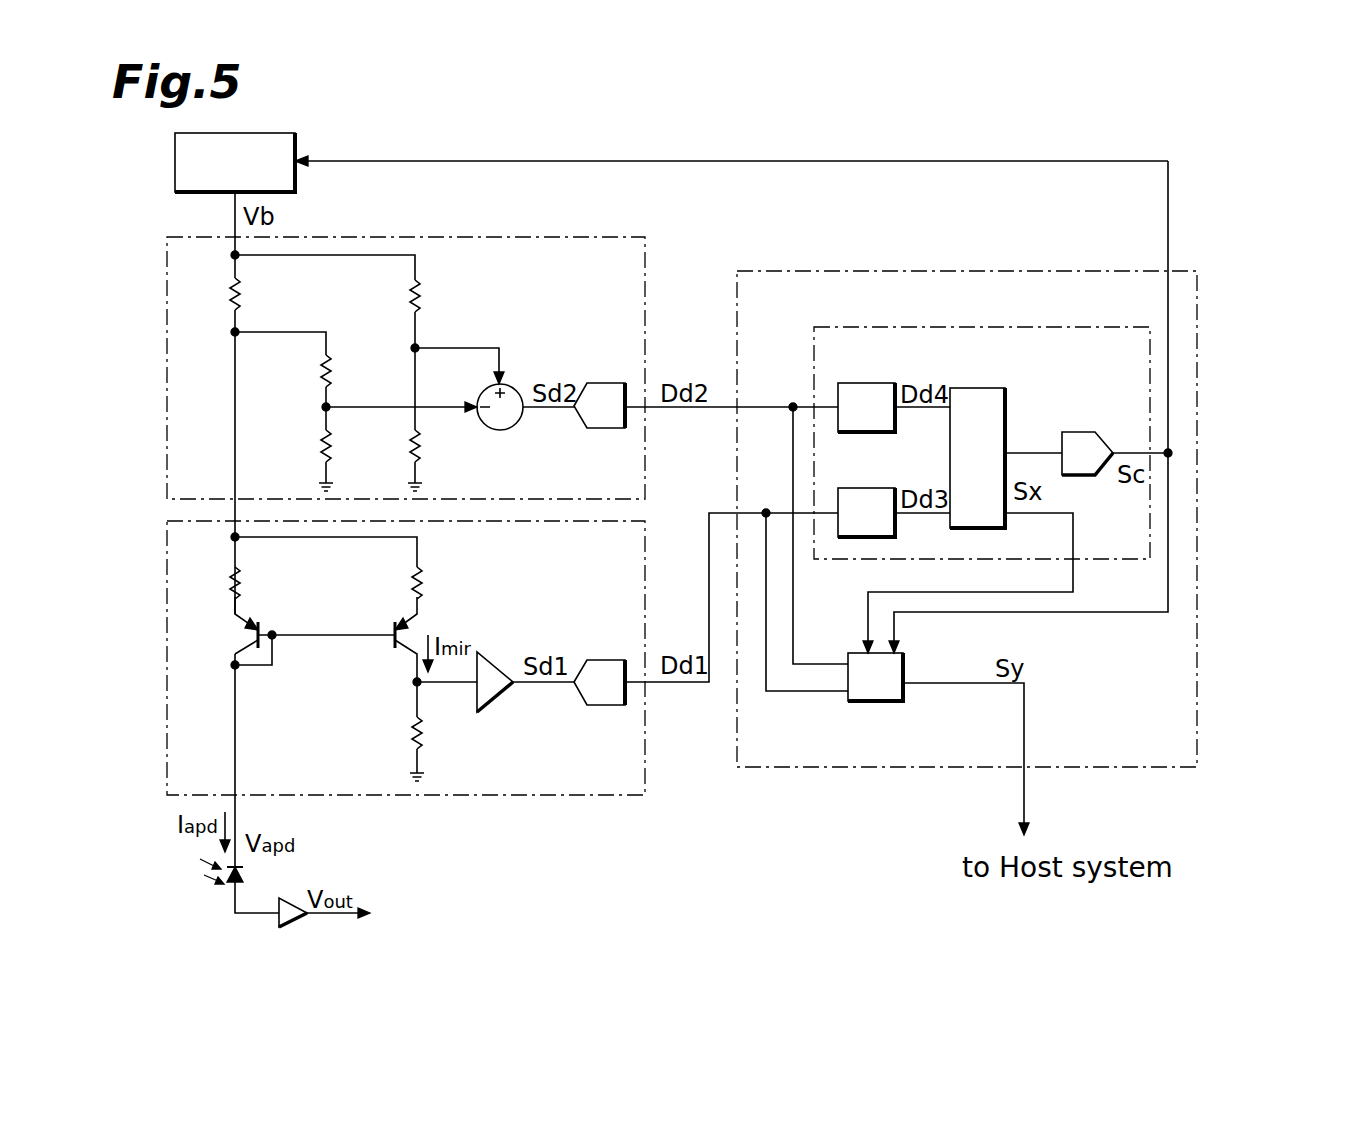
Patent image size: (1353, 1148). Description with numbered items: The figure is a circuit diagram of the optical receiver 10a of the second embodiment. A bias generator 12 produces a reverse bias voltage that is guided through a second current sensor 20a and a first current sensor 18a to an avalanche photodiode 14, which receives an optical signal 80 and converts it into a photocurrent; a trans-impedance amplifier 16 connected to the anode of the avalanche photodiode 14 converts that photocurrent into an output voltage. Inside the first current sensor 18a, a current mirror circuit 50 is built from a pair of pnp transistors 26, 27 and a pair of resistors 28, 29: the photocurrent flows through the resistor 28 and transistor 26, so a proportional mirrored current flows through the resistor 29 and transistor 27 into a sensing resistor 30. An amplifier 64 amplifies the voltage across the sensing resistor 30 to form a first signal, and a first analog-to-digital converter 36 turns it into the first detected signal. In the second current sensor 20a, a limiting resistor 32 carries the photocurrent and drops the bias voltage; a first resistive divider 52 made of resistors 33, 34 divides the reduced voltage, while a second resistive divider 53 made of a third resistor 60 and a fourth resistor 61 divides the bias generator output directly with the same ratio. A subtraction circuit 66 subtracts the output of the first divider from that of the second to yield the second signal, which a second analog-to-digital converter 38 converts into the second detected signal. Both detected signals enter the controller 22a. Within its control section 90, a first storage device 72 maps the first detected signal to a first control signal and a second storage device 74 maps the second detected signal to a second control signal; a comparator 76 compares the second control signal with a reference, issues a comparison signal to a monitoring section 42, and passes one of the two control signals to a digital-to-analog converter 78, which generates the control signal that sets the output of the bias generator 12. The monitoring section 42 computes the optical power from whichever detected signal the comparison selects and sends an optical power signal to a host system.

The optical receiver 10a is at (1262, 188).
The bias generator 12 is at (175, 160).
The avalanche photodiode 14 is at (232, 885).
The trans-impedance amplifier 16 is at (278, 924).
The first current sensor 18a is at (167, 600).
The second current sensor 20a is at (167, 298).
The controller 22a is at (1198, 318).
The pnp transistor 26 is at (262, 626).
The pnp transistor 27 is at (392, 626).
The resistor 28 is at (240, 580).
The resistor 29 is at (414, 580).
The sensing resistor 30 is at (413, 728).
The limiting resistor 32 is at (232, 292).
The resistor 33 is at (323, 370).
The resistor 34 is at (323, 443).
The first analog-to-digital converter 36 is at (602, 660).
The second analog-to-digital converter 38 is at (602, 383).
The monitoring section 42 is at (877, 704).
The current mirror circuit 50 is at (293, 672).
The first resistive divider 52 is at (320, 325).
The second resistive divider 53 is at (430, 256).
The third resistor 60 is at (412, 292).
The fourth resistor 61 is at (412, 443).
The amplifier 64 is at (499, 652).
The subtraction circuit 66 is at (502, 431).
The first storage device 72 is at (868, 488).
The second storage device 74 is at (868, 383).
The comparator 76 is at (977, 388).
The digital-to-analog converter 78 is at (1080, 432).
The optical signal 80 is at (200, 859).
The control section 90 is at (1068, 326).